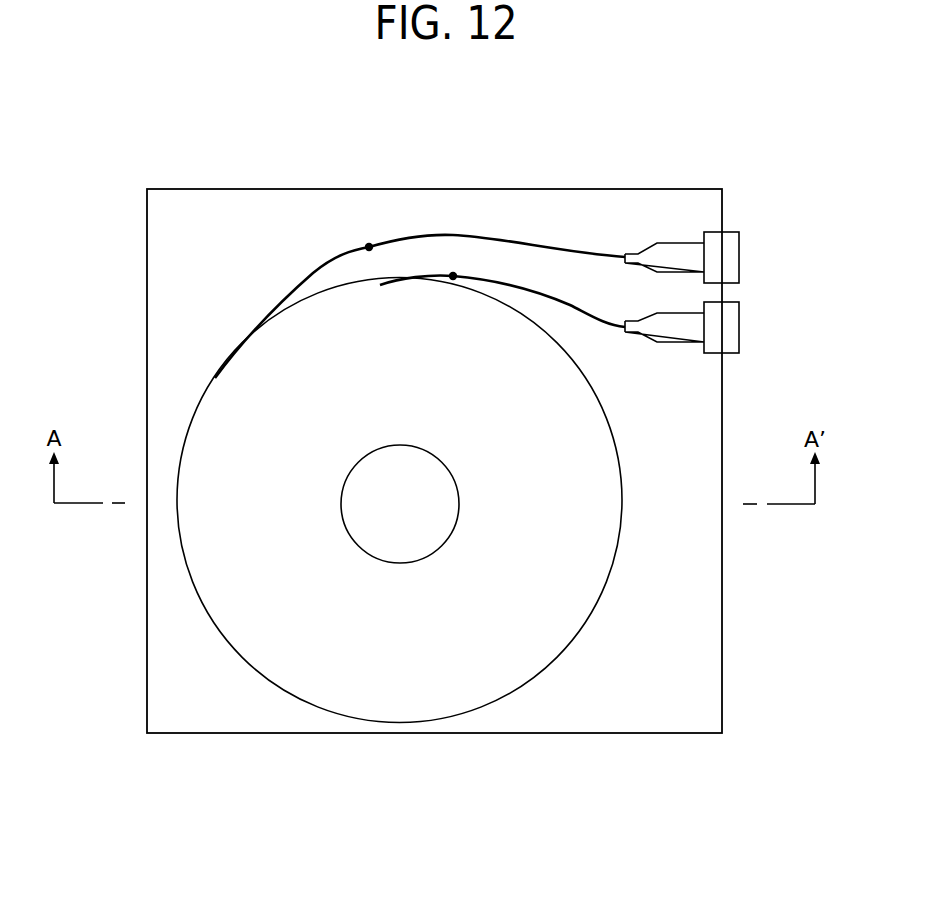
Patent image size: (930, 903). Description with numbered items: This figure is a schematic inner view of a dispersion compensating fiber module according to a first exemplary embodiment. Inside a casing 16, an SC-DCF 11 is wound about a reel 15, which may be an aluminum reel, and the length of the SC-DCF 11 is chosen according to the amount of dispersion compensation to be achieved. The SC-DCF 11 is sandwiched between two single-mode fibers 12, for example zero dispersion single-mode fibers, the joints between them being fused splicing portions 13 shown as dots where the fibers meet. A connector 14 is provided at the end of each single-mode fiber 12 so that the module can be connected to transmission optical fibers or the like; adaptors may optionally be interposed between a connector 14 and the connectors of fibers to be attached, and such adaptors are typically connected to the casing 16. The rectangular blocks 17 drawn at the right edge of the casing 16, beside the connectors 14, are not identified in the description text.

The SC-DCF 11 is at (322, 293).
The single-mode fibers 12 is at (548, 293).
The fused splicing portions 13 is at (453, 276).
The connector 14 is at (678, 313).
The reel 15 is at (398, 667).
The casing 16 is at (147, 613).
The optical module 17 is at (740, 326).